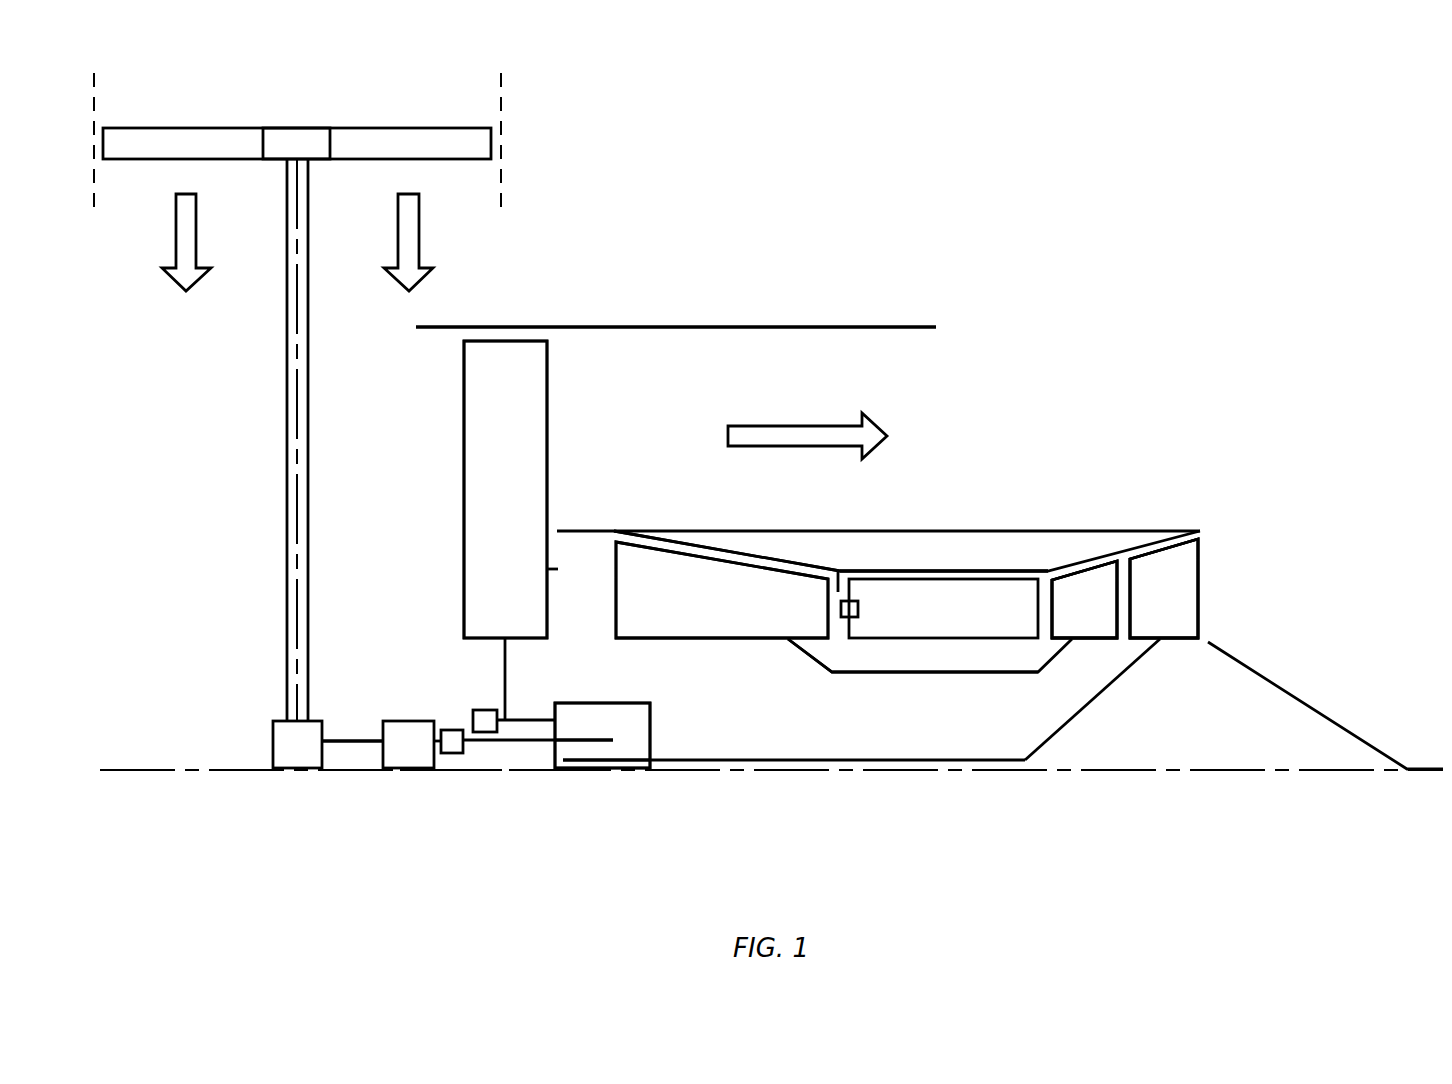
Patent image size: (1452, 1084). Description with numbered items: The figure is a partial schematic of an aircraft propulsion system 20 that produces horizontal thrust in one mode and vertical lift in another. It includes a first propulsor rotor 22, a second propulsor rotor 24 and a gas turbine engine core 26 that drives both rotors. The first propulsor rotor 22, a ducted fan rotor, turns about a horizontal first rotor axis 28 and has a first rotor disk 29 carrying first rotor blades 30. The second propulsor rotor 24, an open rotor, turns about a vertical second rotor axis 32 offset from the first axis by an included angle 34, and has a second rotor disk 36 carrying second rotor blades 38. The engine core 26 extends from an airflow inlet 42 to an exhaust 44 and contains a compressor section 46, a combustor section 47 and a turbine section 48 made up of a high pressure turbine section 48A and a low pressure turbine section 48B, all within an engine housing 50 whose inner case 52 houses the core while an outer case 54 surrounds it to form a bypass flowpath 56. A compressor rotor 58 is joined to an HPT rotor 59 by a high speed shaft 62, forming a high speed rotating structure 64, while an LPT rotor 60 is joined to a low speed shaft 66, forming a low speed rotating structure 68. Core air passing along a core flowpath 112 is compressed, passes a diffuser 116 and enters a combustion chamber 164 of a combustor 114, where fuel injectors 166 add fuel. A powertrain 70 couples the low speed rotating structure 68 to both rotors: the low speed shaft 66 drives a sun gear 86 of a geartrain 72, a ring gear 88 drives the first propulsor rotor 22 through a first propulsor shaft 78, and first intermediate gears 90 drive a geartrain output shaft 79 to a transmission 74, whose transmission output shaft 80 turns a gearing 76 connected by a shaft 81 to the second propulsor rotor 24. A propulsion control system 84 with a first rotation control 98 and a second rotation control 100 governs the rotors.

The aircraft propulsion system 20 is at (1190, 184).
The first propulsor rotor 22 is at (442, 611).
The second propulsor rotor 24 is at (454, 114).
The gas turbine engine core 26 is at (1238, 478).
The first rotor axis 28 is at (1430, 772).
The first rotor disk 29 is at (505, 678).
The first rotor blades 30 is at (464, 470).
The second rotor axis 32 is at (297, 401).
The included angle 34 is at (292, 632).
The second rotor disk 36 is at (297, 128).
The second rotor blades 38 is at (183, 128).
The airflow inlet 42 is at (550, 569).
The exhaust 44 is at (1218, 601).
The compressor section 46 is at (742, 560).
The combustor section 47 is at (970, 563).
The turbine section 48 is at (1169, 458).
The high pressure turbine section 48A is at (1081, 563).
The low pressure turbine section 48B is at (1157, 544).
The engine housing 50 is at (910, 288).
The inner case 52 is at (908, 526).
The outer case 54 is at (720, 322).
The bypass flowpath 56 is at (643, 407).
The compressor rotor 58 is at (772, 640).
The HPT rotor 59 is at (1090, 639).
The LPT rotor 60 is at (1178, 639).
The high speed shaft 62 is at (937, 672).
The high speed rotating structure 64 is at (822, 680).
The low speed shaft 66 is at (898, 760).
The low speed rotating structure 68 is at (1004, 770).
The powertrain 70 is at (456, 826).
The geartrain 72 is at (637, 778).
The transmission 74 is at (422, 760).
The gearing 76 is at (311, 760).
The first propulsor shaft 78 is at (537, 718).
The geartrain output shaft 79 is at (508, 742).
The transmission output shaft 80 is at (350, 741).
The shaft 81 is at (287, 521).
The propulsion control system 84 is at (486, 768).
The sun gear 86 is at (578, 760).
The ring gear 88 is at (583, 727).
The first intermediate gears 90 is at (613, 740).
The first rotation control 98 is at (480, 710).
The second rotation control 100 is at (452, 753).
The core flowpath 112 is at (565, 608).
The combustor 114 is at (945, 573).
The diffuser 116 is at (838, 585).
The combustion chamber 164 is at (975, 625).
The fuel injectors 166 is at (858, 609).